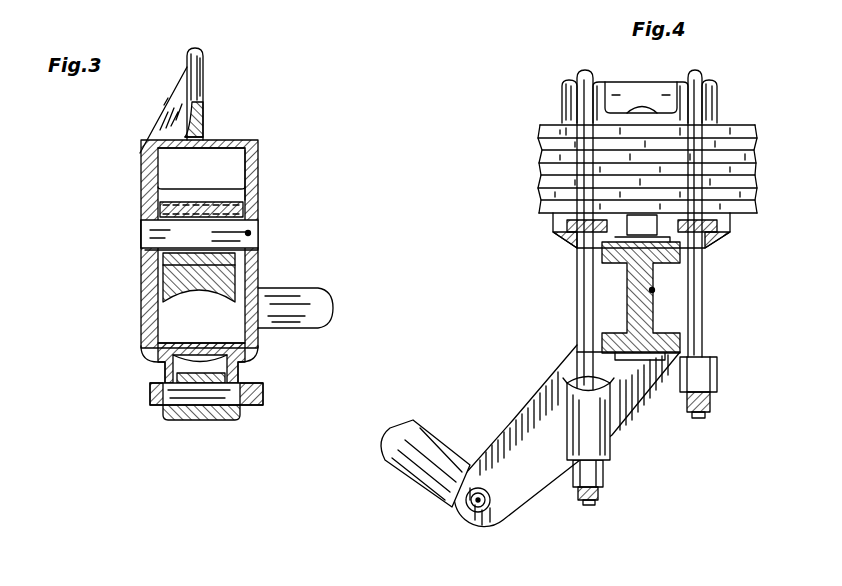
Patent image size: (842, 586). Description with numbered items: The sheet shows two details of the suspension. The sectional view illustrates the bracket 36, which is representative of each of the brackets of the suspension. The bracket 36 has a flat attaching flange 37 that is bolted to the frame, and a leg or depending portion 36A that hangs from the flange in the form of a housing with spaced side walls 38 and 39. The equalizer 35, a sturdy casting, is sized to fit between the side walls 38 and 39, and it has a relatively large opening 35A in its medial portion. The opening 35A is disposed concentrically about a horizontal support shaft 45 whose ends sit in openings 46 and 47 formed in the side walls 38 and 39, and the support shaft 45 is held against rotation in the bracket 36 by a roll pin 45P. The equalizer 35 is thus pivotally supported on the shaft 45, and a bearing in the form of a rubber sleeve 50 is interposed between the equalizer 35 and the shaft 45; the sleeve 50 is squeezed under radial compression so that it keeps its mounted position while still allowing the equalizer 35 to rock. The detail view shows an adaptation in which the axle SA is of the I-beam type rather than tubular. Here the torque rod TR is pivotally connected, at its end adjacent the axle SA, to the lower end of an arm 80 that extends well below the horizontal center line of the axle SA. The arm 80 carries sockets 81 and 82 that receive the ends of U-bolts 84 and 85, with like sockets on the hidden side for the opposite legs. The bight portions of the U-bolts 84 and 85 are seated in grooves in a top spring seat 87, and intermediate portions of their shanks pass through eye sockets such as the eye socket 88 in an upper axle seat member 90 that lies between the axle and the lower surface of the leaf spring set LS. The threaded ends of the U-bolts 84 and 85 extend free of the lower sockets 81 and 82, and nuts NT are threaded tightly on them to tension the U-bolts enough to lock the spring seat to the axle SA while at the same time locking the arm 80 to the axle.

In FIG. 3, the equalizer 35 is at (178, 272).
In FIG. 3, the opening 35A is at (186, 202).
In FIG. 3, the bracket 36 is at (205, 93).
In FIG. 3, the depending portion 36A is at (247, 167).
In FIG. 3, the attaching flange 37 is at (203, 120).
In FIG. 3, the side wall 38 is at (150, 327).
In FIG. 3, the side wall 39 is at (247, 186).
In FIG. 3, the support shaft 45 is at (199, 234).
In FIG. 3, the roll pin 45P is at (250, 233).
In FIG. 3, the opening 46 is at (141, 226).
In FIG. 3, the opening 47 is at (260, 250).
In FIG. 3, the rubber sleeve 50 is at (252, 206).
In FIG. 4, the arm 80 is at (545, 487).
In FIG. 4, the socket 81 is at (592, 438).
In FIG. 4, the socket 82 is at (717, 372).
In FIG. 4, the U-bolt 84 is at (577, 300).
In FIG. 4, the U-bolt 85 is at (703, 325).
In FIG. 4, the top spring seat 87 is at (563, 83).
In FIG. 4, the eye socket 88 is at (730, 228).
In FIG. 4, the upper axle seat member 90 is at (567, 225).
In FIG. 4, the leaf spring set LS is at (556, 143).
In FIG. 4, the axle SA is at (654, 290).
In FIG. 4, the nuts NT is at (713, 400).
In FIG. 4, the torque rod TR is at (425, 452).